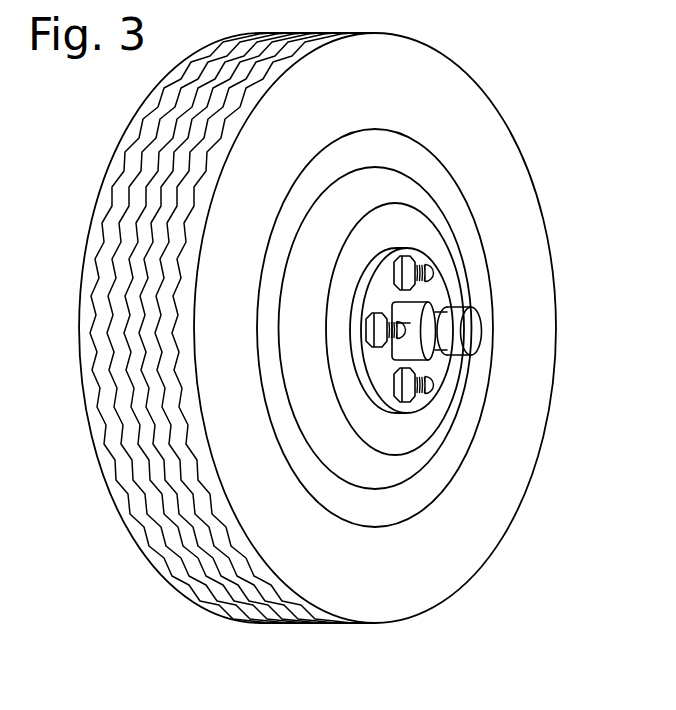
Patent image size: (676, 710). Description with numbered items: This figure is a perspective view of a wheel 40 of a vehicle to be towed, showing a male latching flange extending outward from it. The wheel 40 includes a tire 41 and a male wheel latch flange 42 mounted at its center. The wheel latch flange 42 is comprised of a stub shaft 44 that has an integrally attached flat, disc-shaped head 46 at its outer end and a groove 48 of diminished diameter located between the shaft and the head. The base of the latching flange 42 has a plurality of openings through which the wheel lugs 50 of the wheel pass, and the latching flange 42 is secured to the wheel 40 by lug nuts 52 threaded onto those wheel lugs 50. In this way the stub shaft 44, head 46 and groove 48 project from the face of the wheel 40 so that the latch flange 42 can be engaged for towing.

The wheel 40 is at (108, 163).
The tire 41 is at (477, 84).
The male wheel latch flange 42 is at (512, 297).
The stub shaft 44 is at (374, 378).
The flat, disc-shaped head 46 is at (468, 329).
The groove 48 is at (444, 356).
The wheel lugs 50 is at (406, 330).
The lug nuts 52 is at (393, 281).